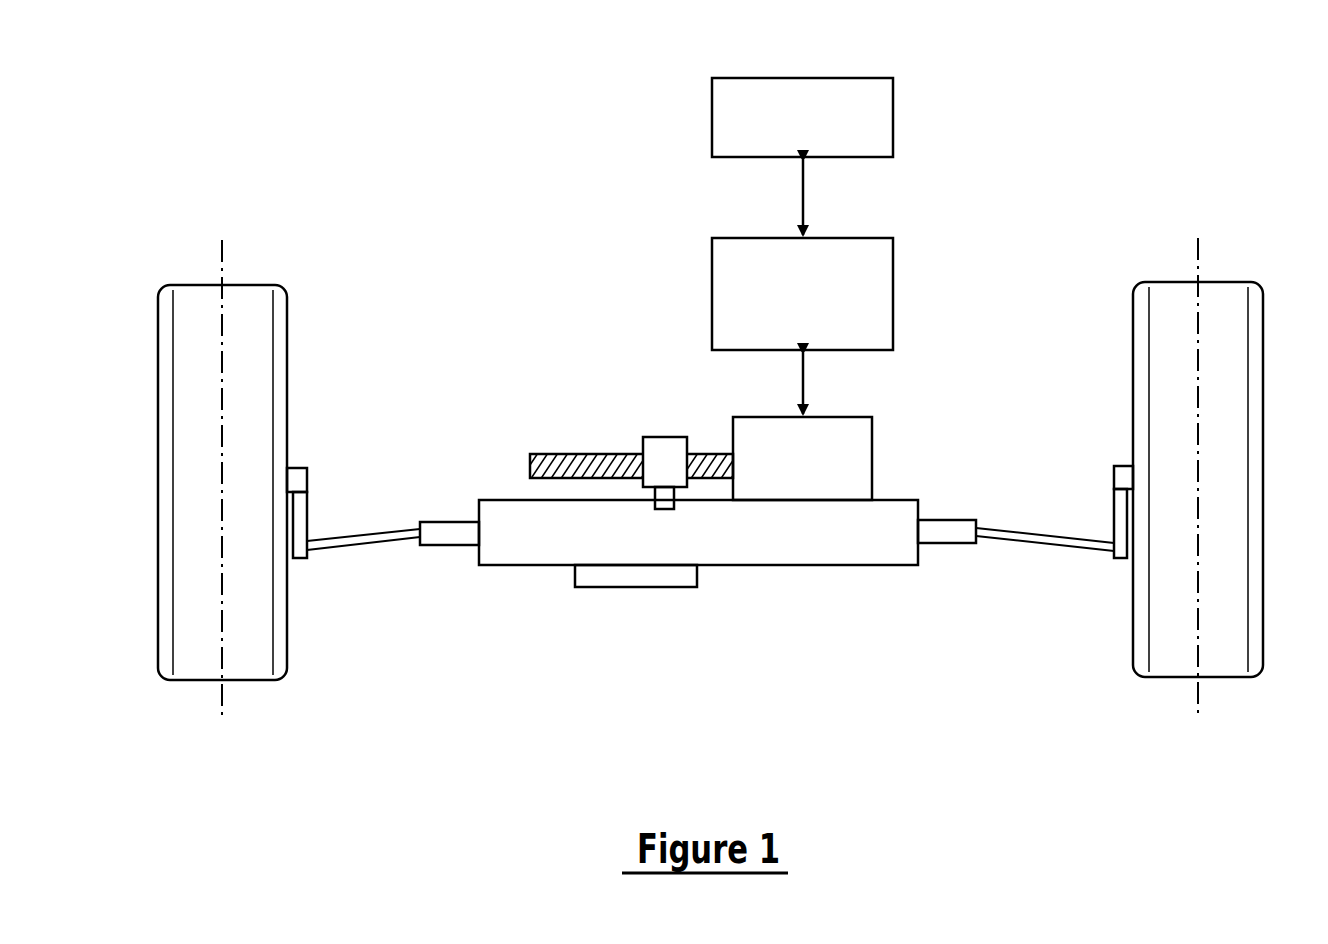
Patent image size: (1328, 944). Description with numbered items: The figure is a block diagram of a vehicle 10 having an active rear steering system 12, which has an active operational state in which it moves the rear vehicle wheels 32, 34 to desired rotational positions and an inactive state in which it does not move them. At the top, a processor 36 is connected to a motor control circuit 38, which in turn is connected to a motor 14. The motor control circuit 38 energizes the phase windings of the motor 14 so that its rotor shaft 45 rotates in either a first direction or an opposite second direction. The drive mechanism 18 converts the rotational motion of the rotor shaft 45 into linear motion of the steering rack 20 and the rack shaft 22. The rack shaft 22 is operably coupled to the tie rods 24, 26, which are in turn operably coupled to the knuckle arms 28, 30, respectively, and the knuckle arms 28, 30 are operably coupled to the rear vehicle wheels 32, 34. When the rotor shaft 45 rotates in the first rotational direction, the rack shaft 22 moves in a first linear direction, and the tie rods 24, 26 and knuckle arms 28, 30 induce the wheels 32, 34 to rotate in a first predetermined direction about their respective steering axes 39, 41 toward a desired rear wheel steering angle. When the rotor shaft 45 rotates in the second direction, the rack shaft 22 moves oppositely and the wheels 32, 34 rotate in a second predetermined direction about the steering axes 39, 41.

The vehicle 10 is at (1037, 221).
The active rear steering system 12 is at (914, 188).
The motor 14 is at (872, 455).
The drive mechanism 18 is at (661, 437).
The steering rack 20 is at (840, 548).
The rack shaft 22 is at (950, 545).
The tie rod 24 is at (375, 537).
The tie rod 26 is at (1012, 528).
The knuckle arm 28 is at (307, 508).
The knuckle arm 30 is at (1114, 506).
The rear vehicle wheel 32 is at (250, 283).
The rear vehicle wheel 34 is at (1225, 282).
The processor 36 is at (803, 78).
The motor control circuit 38 is at (893, 290).
The steering axis 39 is at (225, 703).
The steering axis 41 is at (1200, 703).
The rotor shaft 45 is at (576, 454).